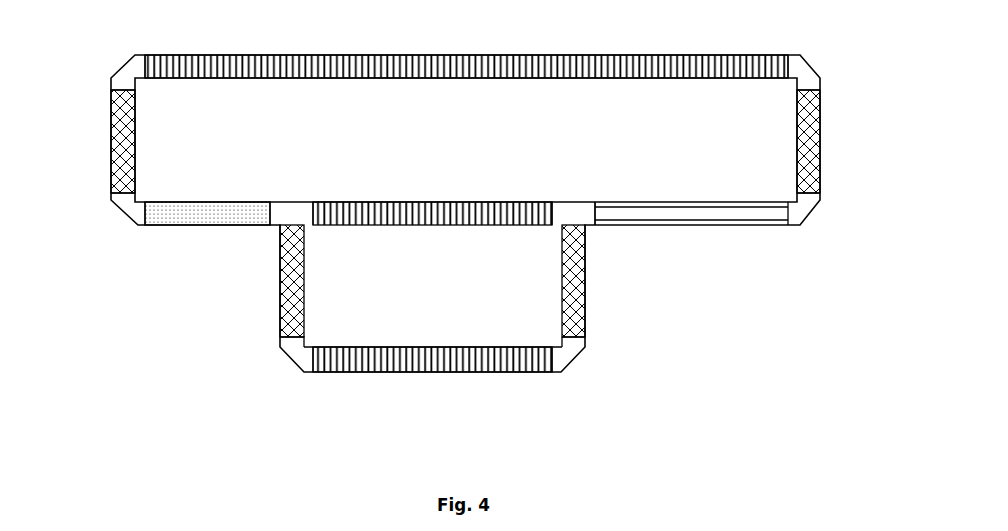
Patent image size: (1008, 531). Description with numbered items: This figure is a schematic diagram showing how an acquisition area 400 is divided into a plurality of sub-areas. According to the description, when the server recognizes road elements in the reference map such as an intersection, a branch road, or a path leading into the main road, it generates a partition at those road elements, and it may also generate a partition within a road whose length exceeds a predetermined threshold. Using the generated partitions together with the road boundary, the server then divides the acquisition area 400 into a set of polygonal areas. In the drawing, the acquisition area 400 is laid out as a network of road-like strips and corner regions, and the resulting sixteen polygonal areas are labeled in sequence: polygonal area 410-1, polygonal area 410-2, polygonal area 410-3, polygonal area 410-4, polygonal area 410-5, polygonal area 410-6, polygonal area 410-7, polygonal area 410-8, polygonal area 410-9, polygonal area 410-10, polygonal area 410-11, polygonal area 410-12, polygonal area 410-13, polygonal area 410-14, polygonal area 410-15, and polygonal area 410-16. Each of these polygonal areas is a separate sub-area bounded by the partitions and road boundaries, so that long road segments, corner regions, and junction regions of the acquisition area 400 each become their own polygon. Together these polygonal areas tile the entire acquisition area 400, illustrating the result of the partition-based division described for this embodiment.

The acquisition area 400 is at (116, 26).
The polygonal area 410-1 is at (123, 77).
The polygonal area 410-2 is at (466, 66).
The polygonal area 410-3 is at (806, 69).
The polygonal area 410-4 is at (810, 140).
The polygonal area 410-5 is at (803, 207).
The polygonal area 410-6 is at (691, 213).
The polygonal area 410-7 is at (572, 210).
The polygonal area 410-8 is at (432, 213).
The polygonal area 410-9 is at (290, 208).
The polygonal area 410-10 is at (122, 148).
The polygonal area 410-11 is at (133, 210).
The polygonal area 410-12 is at (290, 290).
The polygonal area 410-13 is at (295, 352).
The polygonal area 410-14 is at (432, 359).
The polygonal area 410-15 is at (570, 352).
The polygonal area 410-16 is at (577, 290).